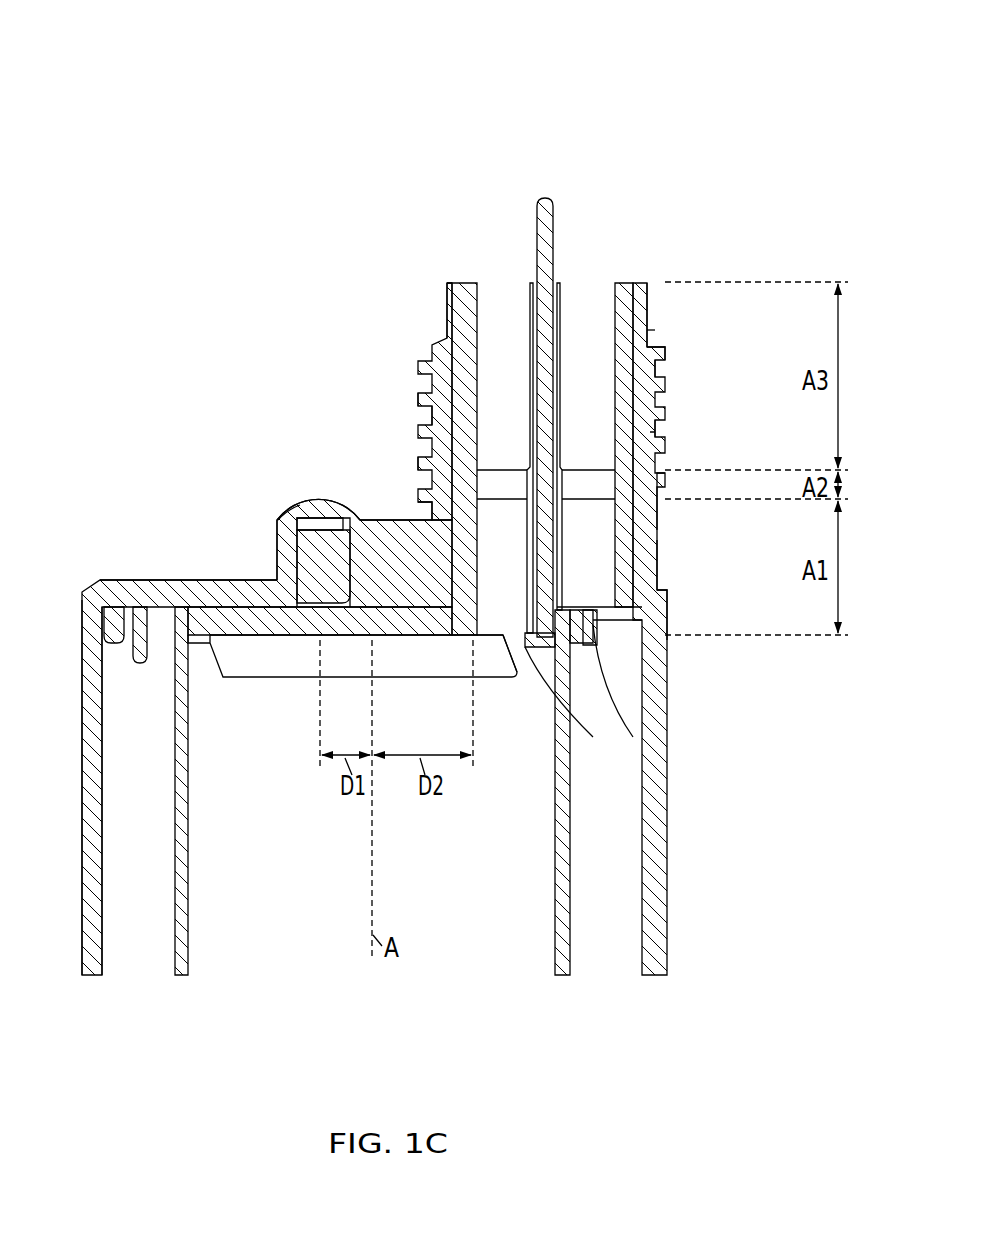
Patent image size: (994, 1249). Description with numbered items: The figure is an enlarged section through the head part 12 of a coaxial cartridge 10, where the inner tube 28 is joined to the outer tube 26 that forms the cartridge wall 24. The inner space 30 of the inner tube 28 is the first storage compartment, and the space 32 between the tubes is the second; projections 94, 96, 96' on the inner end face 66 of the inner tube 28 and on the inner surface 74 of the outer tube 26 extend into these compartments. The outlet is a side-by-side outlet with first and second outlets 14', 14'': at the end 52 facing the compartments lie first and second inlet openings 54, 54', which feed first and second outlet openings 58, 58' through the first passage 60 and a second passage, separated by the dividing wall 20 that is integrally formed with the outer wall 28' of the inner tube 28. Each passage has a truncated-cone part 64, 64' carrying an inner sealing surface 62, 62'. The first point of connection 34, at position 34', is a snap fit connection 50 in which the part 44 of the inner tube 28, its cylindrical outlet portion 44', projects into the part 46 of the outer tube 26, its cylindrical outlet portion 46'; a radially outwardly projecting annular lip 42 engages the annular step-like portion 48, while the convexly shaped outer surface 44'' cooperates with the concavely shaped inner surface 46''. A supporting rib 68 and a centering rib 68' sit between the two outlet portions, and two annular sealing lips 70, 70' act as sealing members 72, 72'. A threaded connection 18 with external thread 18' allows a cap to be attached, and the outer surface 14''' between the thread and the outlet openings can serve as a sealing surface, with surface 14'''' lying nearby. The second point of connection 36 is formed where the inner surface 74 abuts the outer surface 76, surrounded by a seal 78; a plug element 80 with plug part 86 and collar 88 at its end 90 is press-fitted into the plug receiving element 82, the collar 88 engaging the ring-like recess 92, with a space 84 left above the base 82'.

The coaxial cartridge 10 is at (205, 95).
The head part 12 is at (120, 534).
The first outlet 14' is at (489, 385).
The second outlet 14'' is at (635, 371).
The outer surface of the outlet 14''' is at (402, 337).
The outer threaded neck component 14'''' is at (707, 261).
The threaded connection 18 is at (371, 268).
The external thread 18' is at (371, 268).
The dividing wall 20 is at (548, 196).
The cartridge wall 24 is at (65, 809).
The outer tube 26 is at (86, 915).
The inner tube 28 is at (163, 826).
The outer wall of the inner tube 28' is at (586, 826).
The inner space 30 is at (345, 861).
The space 32 is at (608, 861).
The first point of connection 34 is at (420, 212).
The position of the first point of connection 34' is at (420, 212).
The second point of connection 36 is at (331, 487).
The radially outwardly projecting annular lip 42 is at (649, 290).
The part of the inner tube 44 is at (710, 382).
The cylindrical outlet portion of the inner tube 44' is at (714, 513).
The convexly shaped outer surface 44'' is at (349, 312).
The part of the outer tube 46 is at (710, 361).
The cylindrical outlet portion of the outer tube 46' is at (710, 361).
The concavely shaped inner surface 46'' is at (712, 328).
The annular step-like portion 48 is at (653, 308).
The snap fit connection 50 is at (452, 276).
The end of the outlet 52 is at (585, 636).
The first inlet opening 54 is at (632, 742).
The second inlet opening 54' is at (669, 675).
The first outlet opening 58 is at (489, 385).
The second outlet opening 58' is at (635, 371).
The first passage 60 is at (544, 369).
The inner sealing surface 62 is at (329, 397).
The inner sealing surface 62' is at (715, 445).
The part of the first passage 64 is at (329, 397).
The part of the second passage 64' is at (715, 445).
The inner end face of the inner tube 66 is at (492, 640).
The supporting rib 68 is at (712, 488).
The centering rib 68' is at (524, 353).
The annular sealing lip 70 is at (712, 612).
The annular sealing lip 70' is at (715, 565).
The sealing member 72 is at (712, 612).
The sealing member 72' is at (715, 565).
The inner surface of the outer tube 74 is at (226, 592).
The outer surface of the inner tube 76 is at (401, 636).
The seal 78 is at (180, 590).
The plug element 80 is at (320, 823).
The plug receiving element 82 is at (287, 490).
The base of the plug receiving element 82' is at (287, 490).
The space 84 is at (335, 522).
The plug part 86 is at (297, 600).
The collar 88 is at (272, 558).
The end of the plug element 90 is at (362, 520).
The ring-like recess 92 is at (276, 545).
The projection 94 is at (503, 640).
The projection 96 is at (386, 681).
The projection 96' is at (90, 658).